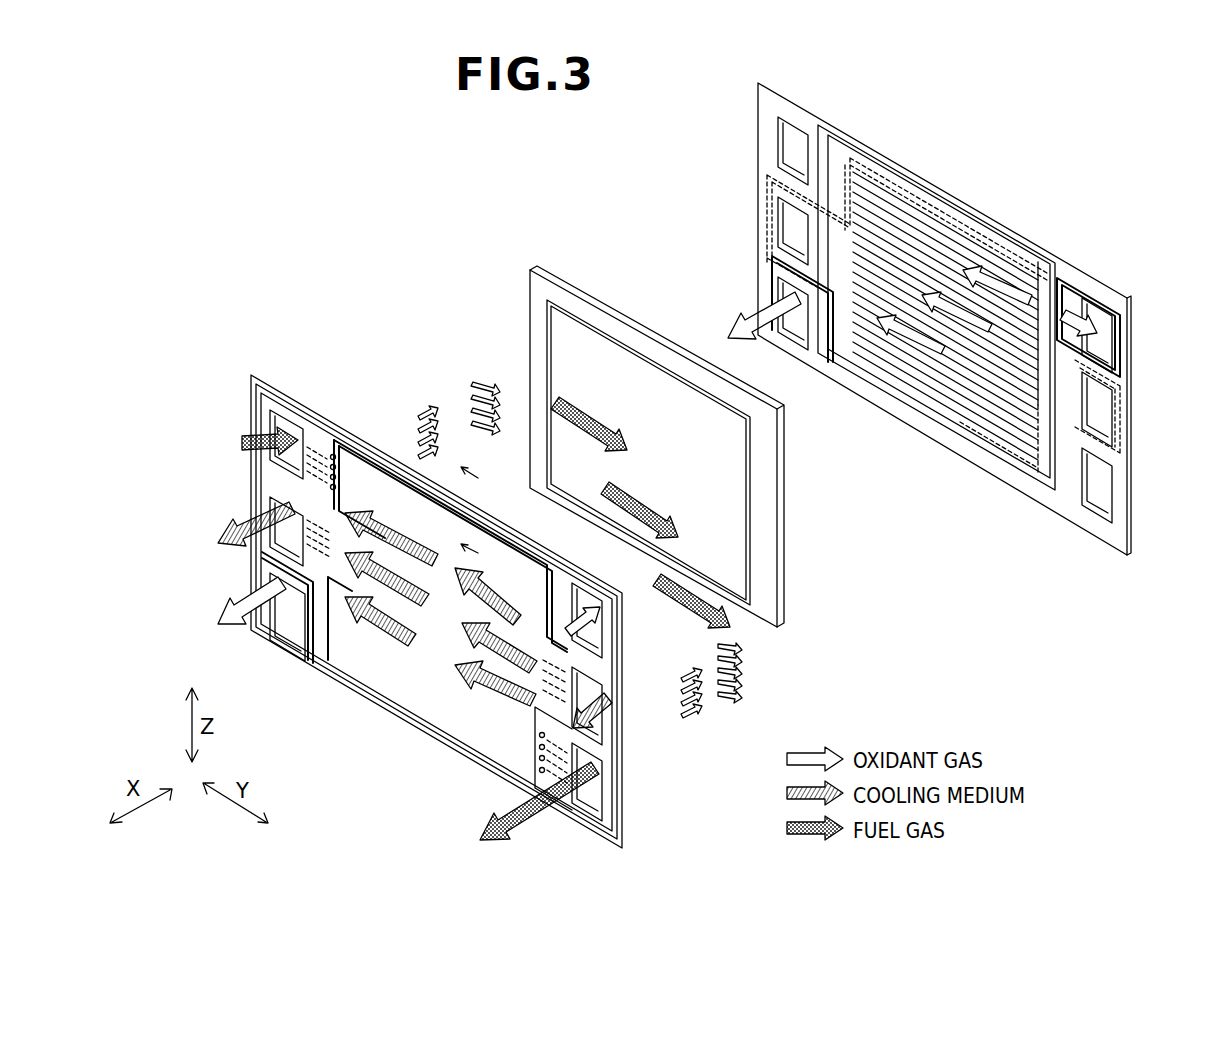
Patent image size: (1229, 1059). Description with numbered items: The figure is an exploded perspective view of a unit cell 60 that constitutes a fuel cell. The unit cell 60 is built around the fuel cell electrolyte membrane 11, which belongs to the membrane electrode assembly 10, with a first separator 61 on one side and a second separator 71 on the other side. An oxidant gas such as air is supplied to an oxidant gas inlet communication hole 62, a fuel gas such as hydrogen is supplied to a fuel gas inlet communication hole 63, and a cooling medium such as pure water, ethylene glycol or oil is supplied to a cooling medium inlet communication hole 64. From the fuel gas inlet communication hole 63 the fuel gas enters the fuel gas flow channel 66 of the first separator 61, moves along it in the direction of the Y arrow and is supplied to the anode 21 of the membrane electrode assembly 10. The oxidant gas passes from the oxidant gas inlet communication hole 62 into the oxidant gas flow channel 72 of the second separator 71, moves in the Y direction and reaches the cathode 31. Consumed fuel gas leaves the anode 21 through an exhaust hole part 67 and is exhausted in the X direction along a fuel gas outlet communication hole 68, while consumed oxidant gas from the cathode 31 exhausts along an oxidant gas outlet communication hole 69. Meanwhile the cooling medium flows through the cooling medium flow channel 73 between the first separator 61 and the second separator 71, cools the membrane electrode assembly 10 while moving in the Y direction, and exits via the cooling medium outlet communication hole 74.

The membrane electrode assembly 10 is at (630, 401).
The fuel cell electrolyte membrane 11 is at (531, 270).
The anode 21 is at (568, 350).
The cathode 31 is at (612, 326).
The unit cell 60 is at (407, 184).
The first separator 61 is at (250, 374).
The oxidant gas inlet communication hole 62 is at (598, 650).
The fuel gas inlet communication hole 63 is at (272, 421).
The cooling medium inlet communication hole 64 is at (334, 455).
The fuel gas flow channel 66 is at (495, 504).
The exhaust hole part 67 is at (535, 727).
The fuel gas outlet communication hole 68 is at (600, 798).
The oxidant gas outlet communication hole 69 is at (272, 583).
The second separator 71 is at (742, 91).
The oxidant gas flow channel 72 is at (932, 232).
The cooling medium flow channel 73 is at (403, 668).
The cooling medium outlet communication hole 74 is at (272, 501).